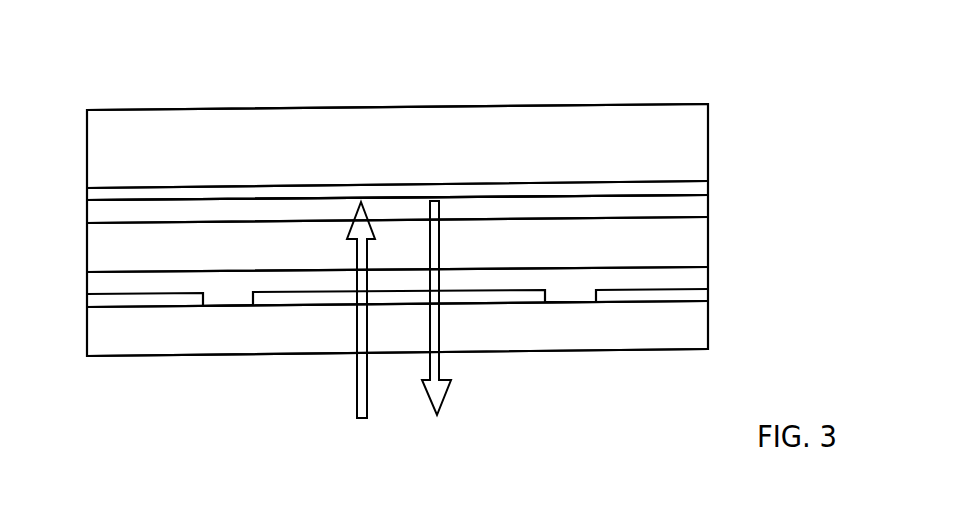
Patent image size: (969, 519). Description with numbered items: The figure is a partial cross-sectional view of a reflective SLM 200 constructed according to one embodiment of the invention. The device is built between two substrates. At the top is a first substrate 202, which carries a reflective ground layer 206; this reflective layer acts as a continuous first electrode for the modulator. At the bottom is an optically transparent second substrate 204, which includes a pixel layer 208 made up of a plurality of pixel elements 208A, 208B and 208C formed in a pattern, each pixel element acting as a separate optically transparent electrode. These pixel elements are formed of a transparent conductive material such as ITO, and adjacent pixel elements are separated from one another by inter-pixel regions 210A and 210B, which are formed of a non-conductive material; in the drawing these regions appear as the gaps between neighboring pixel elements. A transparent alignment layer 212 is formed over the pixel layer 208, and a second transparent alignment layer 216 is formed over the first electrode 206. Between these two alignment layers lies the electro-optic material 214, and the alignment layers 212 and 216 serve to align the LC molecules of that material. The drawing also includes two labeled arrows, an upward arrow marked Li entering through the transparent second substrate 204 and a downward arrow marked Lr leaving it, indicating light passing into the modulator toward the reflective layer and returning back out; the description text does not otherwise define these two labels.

The reflective SLM 200 is at (724, 73).
The first substrate 202 is at (708, 132).
The second substrate 204 is at (708, 328).
The reflective ground layer 206 is at (708, 185).
The pixel layer 208 is at (708, 294).
The pixel element 208A is at (657, 302).
The pixel element 208B is at (407, 305).
The pixel element 208C is at (142, 307).
The inter-pixel region 210A is at (573, 307).
The inter-pixel region 210B is at (224, 309).
The transparent alignment layer 212 is at (708, 277).
The electro-optic material 214 is at (80, 223).
The transparent alignment layer 216 is at (708, 205).
The incident light Li is at (357, 384).
The reflected light Lr is at (443, 371).